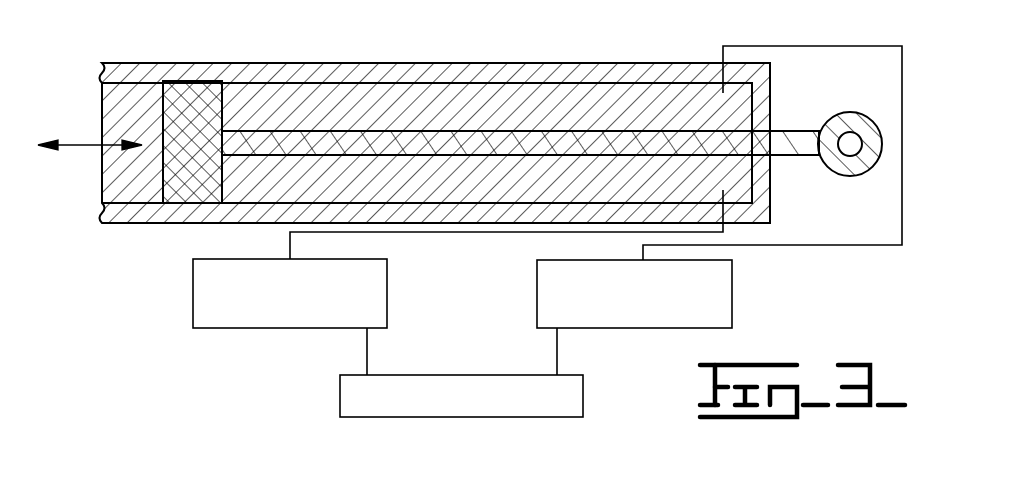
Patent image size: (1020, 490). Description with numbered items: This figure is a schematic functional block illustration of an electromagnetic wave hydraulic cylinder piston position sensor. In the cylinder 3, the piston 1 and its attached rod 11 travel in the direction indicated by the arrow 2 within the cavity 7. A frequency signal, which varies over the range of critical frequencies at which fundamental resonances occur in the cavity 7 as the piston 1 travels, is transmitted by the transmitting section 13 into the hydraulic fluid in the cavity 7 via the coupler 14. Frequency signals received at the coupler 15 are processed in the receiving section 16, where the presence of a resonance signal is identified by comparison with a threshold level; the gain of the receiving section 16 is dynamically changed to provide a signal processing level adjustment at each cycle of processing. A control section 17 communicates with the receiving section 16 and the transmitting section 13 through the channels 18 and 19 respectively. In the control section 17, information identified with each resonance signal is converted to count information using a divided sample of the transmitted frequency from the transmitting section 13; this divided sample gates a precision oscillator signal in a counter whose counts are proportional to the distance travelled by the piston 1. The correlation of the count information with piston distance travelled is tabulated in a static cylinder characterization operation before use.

The piston 1 is at (163, 117).
The arrow 2 is at (92, 145).
The cylinder 3 is at (193, 81).
The cavity 7 is at (613, 105).
The rod 11 is at (798, 132).
The transmitting section 13 is at (193, 300).
The coupler 14 is at (723, 232).
The coupler 15 is at (723, 53).
The receiving section 16 is at (537, 302).
The control section 17 is at (340, 402).
The channel 18 is at (557, 358).
The channel 19 is at (367, 358).